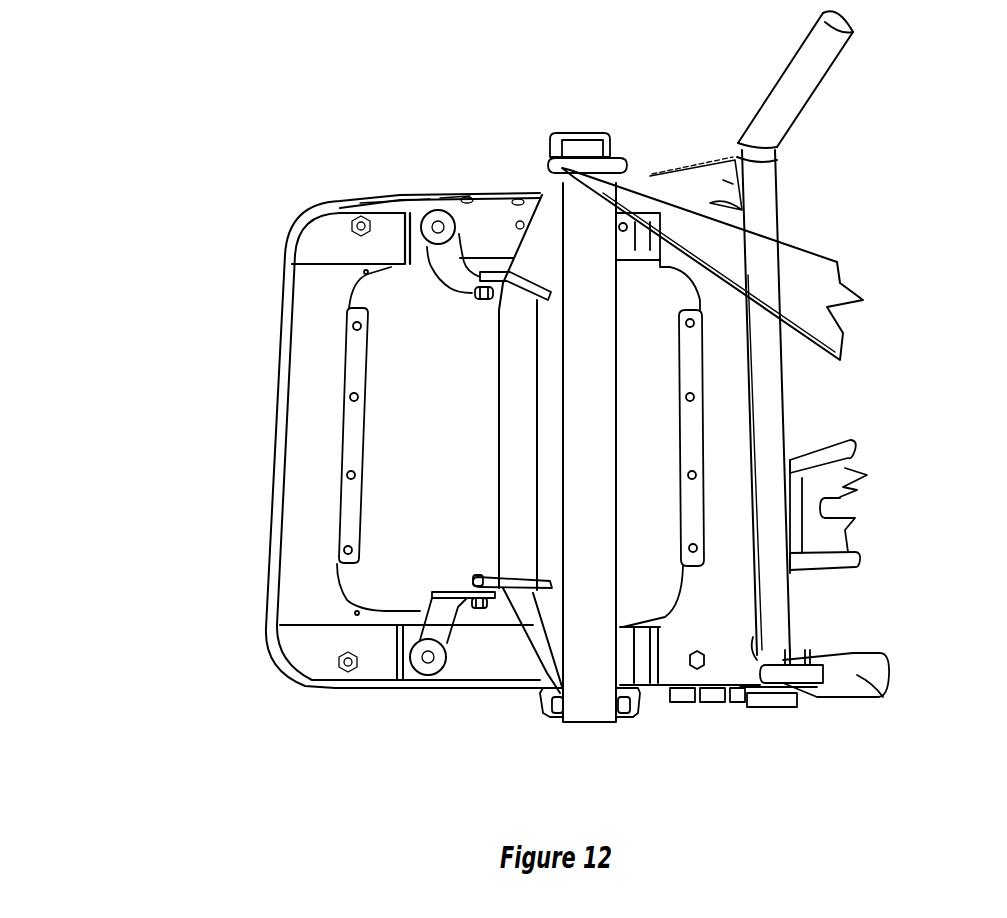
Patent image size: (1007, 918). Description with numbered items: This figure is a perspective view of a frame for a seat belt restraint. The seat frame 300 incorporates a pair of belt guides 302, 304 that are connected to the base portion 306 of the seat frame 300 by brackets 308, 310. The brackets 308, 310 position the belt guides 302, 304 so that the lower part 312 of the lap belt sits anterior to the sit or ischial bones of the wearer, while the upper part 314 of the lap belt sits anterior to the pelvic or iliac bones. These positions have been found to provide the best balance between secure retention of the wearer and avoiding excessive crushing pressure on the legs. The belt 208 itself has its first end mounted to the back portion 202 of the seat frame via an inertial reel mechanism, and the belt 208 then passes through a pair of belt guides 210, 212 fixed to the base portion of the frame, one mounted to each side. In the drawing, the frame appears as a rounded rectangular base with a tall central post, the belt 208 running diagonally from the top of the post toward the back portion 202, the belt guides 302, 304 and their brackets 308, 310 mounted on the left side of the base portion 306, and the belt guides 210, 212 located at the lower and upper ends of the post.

The seat frame 300 is at (845, 99).
The belt guide 212 is at (547, 173).
The bracket 308 is at (427, 203).
The belt guide 302 is at (507, 293).
The upper part of the lap belt 314 is at (598, 450).
The lower part of the lap belt 312 is at (507, 413).
The belt guide 304 is at (500, 573).
The base portion 306 is at (297, 640).
The bracket 310 is at (422, 690).
The belt guide 210 is at (618, 722).
The back portion 202 is at (880, 700).
The belt 208 is at (863, 300).